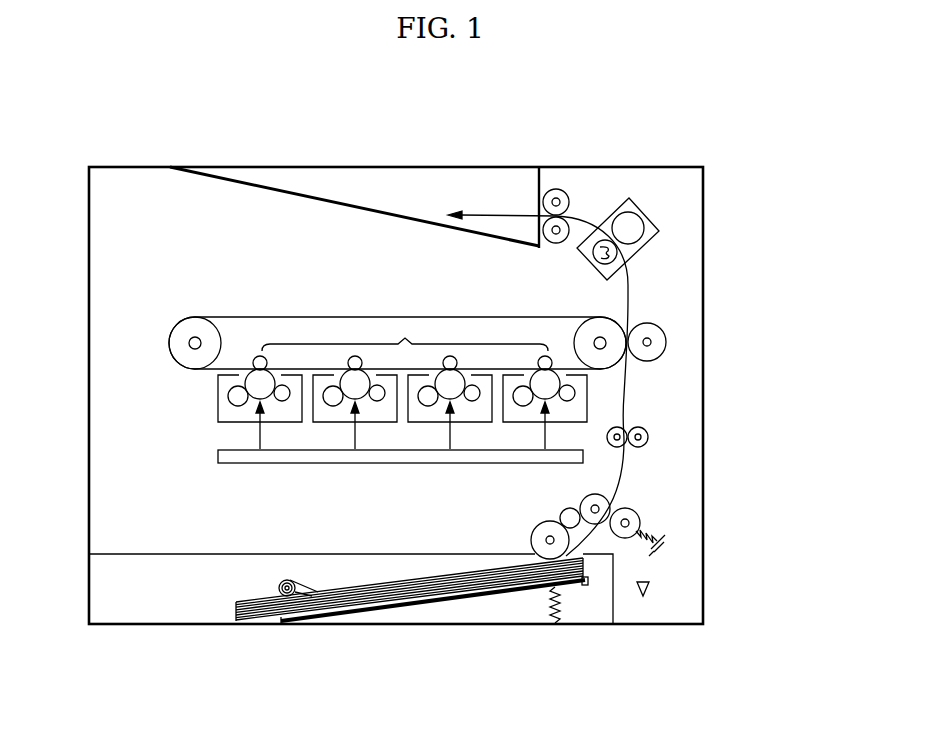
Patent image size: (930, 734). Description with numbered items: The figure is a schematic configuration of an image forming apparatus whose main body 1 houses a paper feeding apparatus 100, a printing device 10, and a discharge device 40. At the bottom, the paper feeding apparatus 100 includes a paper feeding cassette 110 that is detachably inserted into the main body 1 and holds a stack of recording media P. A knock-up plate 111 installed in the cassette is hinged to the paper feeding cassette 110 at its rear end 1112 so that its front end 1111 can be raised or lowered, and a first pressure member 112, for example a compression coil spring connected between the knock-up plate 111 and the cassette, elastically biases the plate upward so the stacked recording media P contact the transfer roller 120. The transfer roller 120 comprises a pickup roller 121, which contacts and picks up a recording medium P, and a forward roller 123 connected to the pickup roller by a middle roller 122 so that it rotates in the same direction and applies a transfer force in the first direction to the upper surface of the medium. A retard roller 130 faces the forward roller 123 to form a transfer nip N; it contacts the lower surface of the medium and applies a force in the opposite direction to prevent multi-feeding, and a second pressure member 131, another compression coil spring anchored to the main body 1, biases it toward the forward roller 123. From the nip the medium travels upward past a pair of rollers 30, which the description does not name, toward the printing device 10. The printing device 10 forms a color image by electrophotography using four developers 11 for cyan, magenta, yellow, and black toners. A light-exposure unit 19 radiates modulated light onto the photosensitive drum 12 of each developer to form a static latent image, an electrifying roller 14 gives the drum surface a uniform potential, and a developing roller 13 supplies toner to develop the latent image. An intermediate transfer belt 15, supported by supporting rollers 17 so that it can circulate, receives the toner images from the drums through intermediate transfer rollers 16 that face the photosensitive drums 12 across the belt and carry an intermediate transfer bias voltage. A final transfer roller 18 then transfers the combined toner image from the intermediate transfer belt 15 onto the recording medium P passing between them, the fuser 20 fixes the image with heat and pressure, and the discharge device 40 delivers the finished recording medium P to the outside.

The main body 1 is at (704, 248).
The printing device 10 is at (354, 431).
The developer 11 is at (214, 428).
The photosensitive drum 12 is at (260, 400).
The developing roller 13 is at (237, 406).
The electrifying roller 14 is at (284, 401).
The intermediate transfer belt 15 is at (283, 315).
The intermediate transfer rollers 16 is at (405, 334).
The supporting rollers 17 is at (170, 343).
The final transfer roller 18 is at (652, 324).
The light-exposure unit 19 is at (408, 464).
The fuser 20 is at (641, 215).
The registration rollers 30 is at (651, 435).
The discharge device 40 is at (555, 179).
The paper feeding apparatus 100 is at (655, 592).
The paper feeding cassette 110 is at (157, 607).
The knock-up plate 111 is at (447, 627).
The first pressure member 112 is at (552, 608).
The transfer roller 120 is at (552, 507).
The pickup roller 121 is at (537, 533).
The middle roller 122 is at (565, 508).
The forward roller 123 is at (598, 495).
The retard roller 130 is at (686, 506).
The second pressure member 131 is at (662, 520).
The front end of the knock-up plate 1111 is at (583, 586).
The rear end of the knock-up plate 1112 is at (320, 616).
The recording medium P is at (395, 580).
The transfer nip N is at (618, 499).